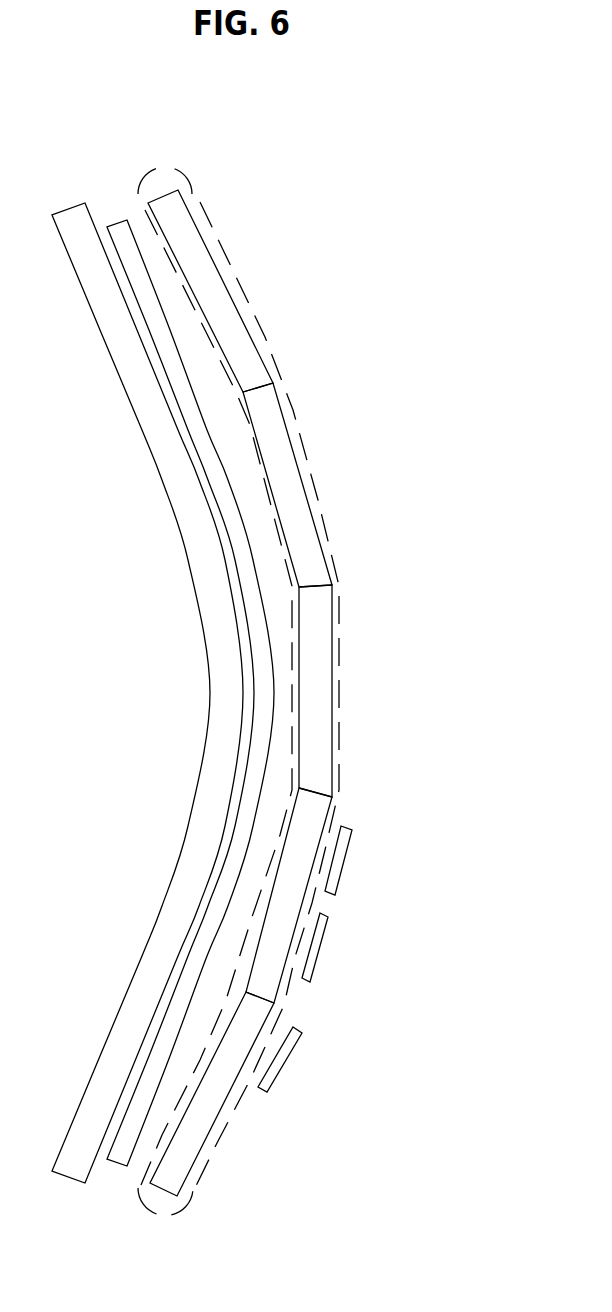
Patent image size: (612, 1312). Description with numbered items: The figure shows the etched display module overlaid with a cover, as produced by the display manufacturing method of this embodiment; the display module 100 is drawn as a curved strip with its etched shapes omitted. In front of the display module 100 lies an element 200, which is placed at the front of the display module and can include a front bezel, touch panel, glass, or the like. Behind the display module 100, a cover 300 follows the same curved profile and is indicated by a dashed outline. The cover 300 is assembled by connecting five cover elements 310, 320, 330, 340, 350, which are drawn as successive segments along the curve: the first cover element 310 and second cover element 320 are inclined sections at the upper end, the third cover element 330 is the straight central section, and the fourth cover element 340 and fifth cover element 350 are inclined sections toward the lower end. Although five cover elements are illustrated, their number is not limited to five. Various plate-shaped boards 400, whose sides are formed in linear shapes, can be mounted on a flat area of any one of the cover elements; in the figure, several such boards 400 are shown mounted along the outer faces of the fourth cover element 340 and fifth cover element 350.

The display module 100 is at (255, 602).
The front element 200 is at (225, 657).
The cover 300 is at (187, 180).
The cover element 310 is at (228, 312).
The cover element 320 is at (293, 477).
The cover element 330 is at (322, 692).
The cover element 340 is at (295, 897).
The cover element 350 is at (217, 1102).
The plate-shaped board 400 is at (338, 862).